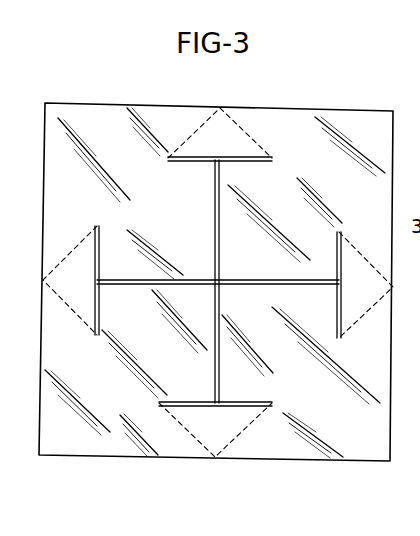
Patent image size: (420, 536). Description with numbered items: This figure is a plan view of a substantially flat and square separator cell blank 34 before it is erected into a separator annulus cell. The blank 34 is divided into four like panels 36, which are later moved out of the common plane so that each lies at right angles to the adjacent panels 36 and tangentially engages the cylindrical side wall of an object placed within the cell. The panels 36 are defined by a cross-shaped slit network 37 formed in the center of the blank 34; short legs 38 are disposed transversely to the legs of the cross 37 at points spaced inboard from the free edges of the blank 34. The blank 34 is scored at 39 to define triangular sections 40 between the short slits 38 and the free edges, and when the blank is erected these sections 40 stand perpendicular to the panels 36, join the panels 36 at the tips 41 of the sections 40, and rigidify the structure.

The separator cell blank 34 is at (313, 122).
The panels 36 is at (183, 228).
The cross-shaped slit network 37 is at (219, 262).
The short legs 38 is at (201, 162).
The score lines 39 is at (249, 140).
The triangular sections 40 is at (243, 148).
The tips 41 is at (272, 161).